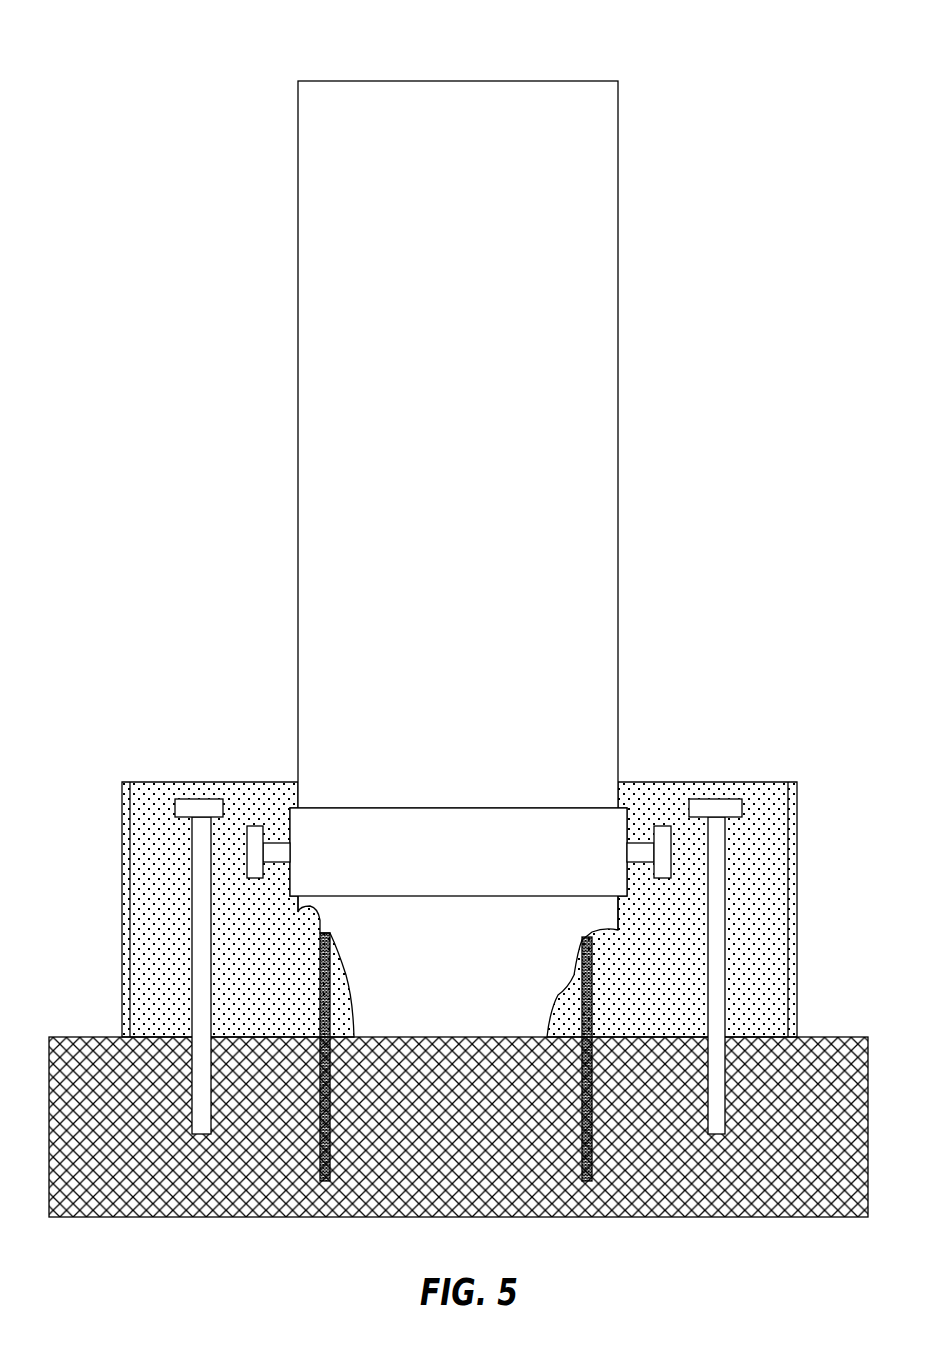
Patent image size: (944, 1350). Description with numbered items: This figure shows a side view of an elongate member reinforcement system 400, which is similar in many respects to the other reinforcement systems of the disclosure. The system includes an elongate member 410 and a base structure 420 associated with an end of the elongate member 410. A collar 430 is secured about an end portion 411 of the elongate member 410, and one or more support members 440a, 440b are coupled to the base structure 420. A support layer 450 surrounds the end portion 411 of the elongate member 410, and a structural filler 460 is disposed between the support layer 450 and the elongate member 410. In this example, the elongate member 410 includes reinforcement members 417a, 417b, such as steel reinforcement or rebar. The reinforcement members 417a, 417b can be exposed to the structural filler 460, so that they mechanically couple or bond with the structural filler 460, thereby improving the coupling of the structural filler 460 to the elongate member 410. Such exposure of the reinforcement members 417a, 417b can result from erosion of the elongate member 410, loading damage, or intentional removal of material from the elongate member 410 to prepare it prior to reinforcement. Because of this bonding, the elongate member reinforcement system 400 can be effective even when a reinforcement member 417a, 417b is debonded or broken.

The elongate member reinforcement system 400 is at (200, 46).
The elongate member 410 is at (298, 162).
The end portion 411 is at (263, 801).
The reinforcement member 417a is at (320, 968).
The reinforcement member 417b is at (593, 983).
The base structure 420 is at (70, 1037).
The collar 430 is at (452, 793).
The support member 440a is at (192, 903).
The support member 440b is at (725, 893).
The support layer 450 is at (122, 845).
The structural filler 460 is at (293, 1016).